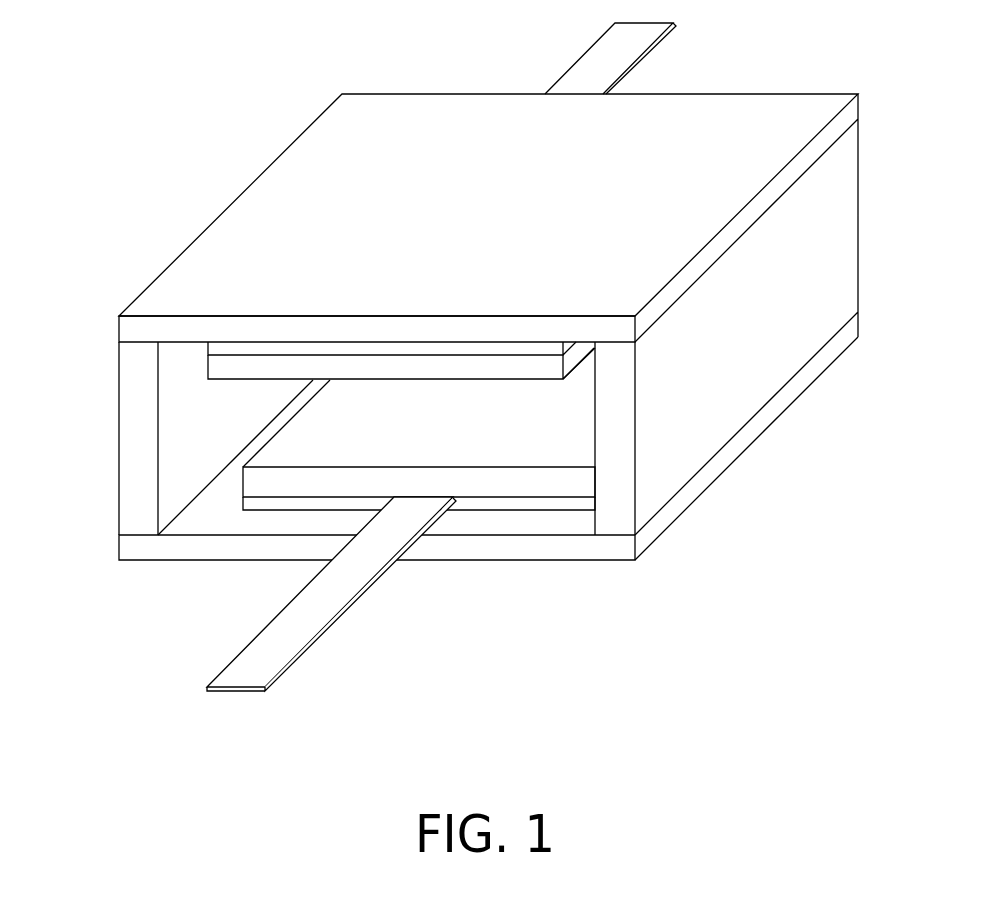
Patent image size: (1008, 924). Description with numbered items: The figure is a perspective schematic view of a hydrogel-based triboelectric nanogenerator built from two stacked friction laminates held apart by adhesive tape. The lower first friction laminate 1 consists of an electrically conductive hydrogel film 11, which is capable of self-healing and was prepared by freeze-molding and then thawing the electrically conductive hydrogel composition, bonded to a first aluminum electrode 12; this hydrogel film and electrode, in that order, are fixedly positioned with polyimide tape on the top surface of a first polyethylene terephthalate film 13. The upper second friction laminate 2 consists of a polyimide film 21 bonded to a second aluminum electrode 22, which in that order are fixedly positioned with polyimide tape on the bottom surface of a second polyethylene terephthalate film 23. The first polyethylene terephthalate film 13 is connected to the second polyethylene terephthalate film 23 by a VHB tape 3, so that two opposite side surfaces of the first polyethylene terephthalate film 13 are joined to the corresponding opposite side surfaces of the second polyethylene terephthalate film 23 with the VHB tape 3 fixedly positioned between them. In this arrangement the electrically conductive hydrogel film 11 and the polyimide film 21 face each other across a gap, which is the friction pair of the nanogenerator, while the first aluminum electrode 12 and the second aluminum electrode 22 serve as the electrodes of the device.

The first friction laminate 1 is at (377, 524).
The electrically conductive hydrogel film 11 is at (495, 486).
The first aluminum electrode 12 is at (542, 503).
The first polyethylene terephthalate film 13 is at (485, 643).
The second friction laminate 2 is at (460, 236).
The polyimide film 21 is at (345, 370).
The second aluminum electrode 22 is at (284, 348).
The second polyethylene terephthalate film 23 is at (207, 293).
The VHB tape 3 is at (142, 440).